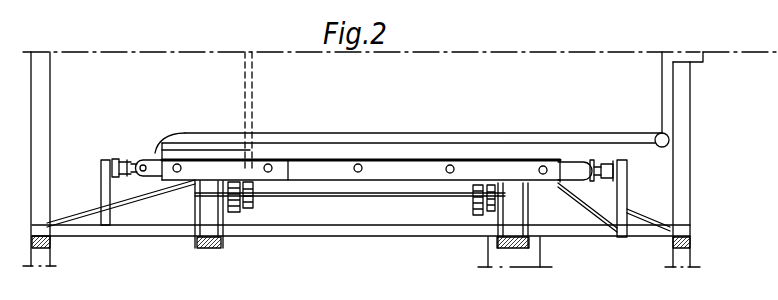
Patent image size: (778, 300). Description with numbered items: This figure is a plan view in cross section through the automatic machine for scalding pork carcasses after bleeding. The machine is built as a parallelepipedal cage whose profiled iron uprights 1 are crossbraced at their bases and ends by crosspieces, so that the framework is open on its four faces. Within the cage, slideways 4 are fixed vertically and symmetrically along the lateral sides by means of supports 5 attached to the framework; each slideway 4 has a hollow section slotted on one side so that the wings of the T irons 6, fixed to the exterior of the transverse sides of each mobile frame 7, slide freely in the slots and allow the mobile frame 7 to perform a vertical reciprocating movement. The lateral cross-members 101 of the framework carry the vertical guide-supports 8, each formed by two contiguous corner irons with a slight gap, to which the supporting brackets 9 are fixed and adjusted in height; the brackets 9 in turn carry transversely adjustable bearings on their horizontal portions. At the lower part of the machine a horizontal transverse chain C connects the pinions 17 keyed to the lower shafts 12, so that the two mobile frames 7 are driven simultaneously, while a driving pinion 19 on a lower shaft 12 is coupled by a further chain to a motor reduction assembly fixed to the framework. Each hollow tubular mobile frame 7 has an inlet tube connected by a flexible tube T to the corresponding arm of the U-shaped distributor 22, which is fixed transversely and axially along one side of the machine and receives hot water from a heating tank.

The profiled iron upright 1 is at (50, 222).
The slideway 4 is at (114, 160).
The support 5 is at (103, 160).
The T iron 6 is at (136, 160).
The mobile frame 7 is at (565, 163).
The vertical guide-support 8 is at (256, 182).
The supporting bracket 9 is at (222, 181).
The lower shaft 12 is at (315, 192).
The pinion 17 is at (295, 160).
The driving pinion 19 is at (496, 226).
The distributor 22 is at (665, 88).
The lateral cross-member 101 is at (187, 231).
The flexible tube T is at (179, 136).
The chain C is at (239, 85).